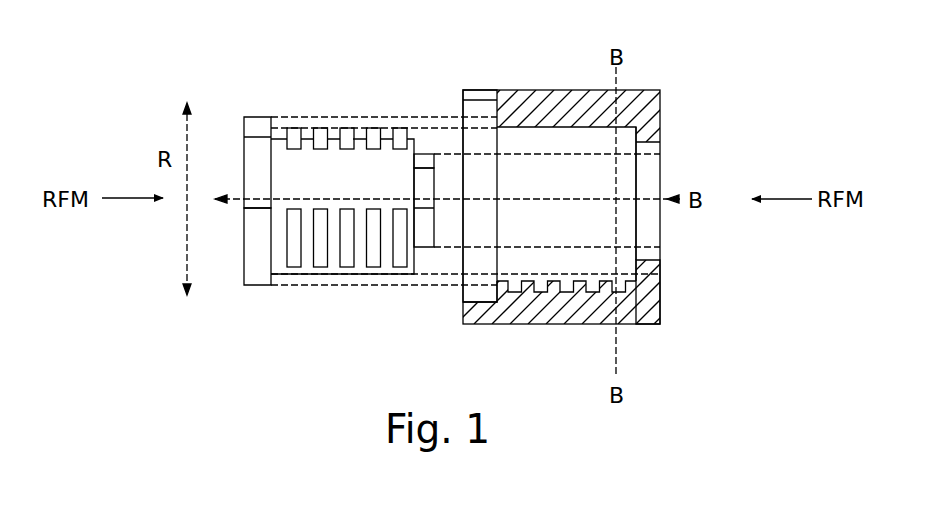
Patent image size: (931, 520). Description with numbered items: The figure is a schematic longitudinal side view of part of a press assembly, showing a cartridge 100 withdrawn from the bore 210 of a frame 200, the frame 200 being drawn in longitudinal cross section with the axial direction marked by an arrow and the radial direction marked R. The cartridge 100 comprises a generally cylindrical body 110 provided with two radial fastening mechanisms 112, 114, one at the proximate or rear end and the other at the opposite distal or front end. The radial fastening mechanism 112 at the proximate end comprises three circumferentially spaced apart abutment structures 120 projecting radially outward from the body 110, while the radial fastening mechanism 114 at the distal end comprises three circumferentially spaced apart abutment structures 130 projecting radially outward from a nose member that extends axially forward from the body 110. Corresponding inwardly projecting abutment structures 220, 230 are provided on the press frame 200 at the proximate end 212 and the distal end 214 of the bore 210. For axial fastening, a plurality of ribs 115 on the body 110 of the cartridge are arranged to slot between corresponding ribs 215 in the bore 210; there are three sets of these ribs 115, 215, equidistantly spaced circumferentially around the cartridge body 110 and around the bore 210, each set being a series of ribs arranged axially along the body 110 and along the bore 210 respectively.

The cartridge 100 is at (333, 88).
The body 110 is at (304, 191).
The radial fastening mechanism 112 is at (258, 143).
The radial fastening mechanism 114 is at (419, 159).
The ribs 115 is at (396, 259).
The abutment structures 120 is at (258, 267).
The abutment structures 130 is at (423, 246).
The frame 200 is at (584, 97).
The bore 210 is at (523, 137).
The proximate end of the bore 212 is at (476, 138).
The distal end of the bore 214 is at (650, 163).
The ribs 215 is at (593, 283).
The abutment structure 220 is at (483, 293).
The abutment structure 230 is at (660, 263).